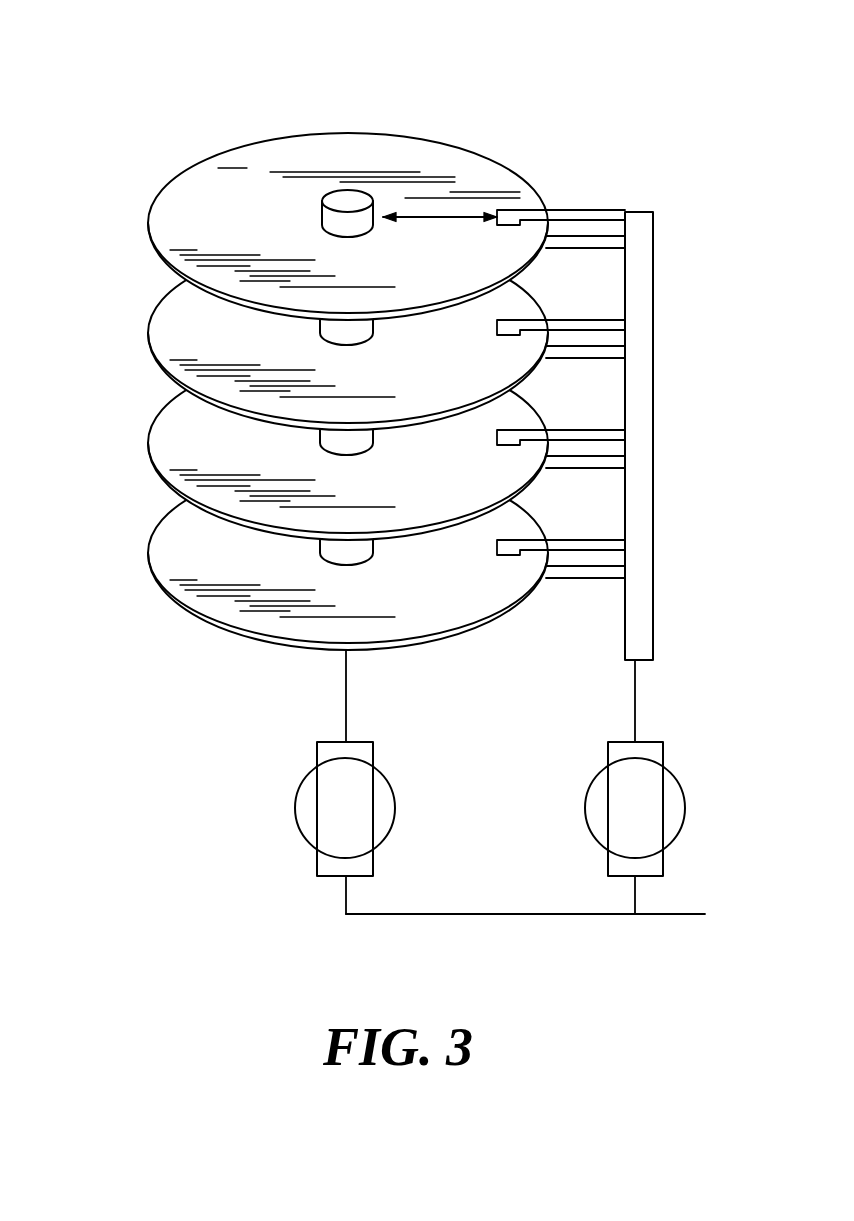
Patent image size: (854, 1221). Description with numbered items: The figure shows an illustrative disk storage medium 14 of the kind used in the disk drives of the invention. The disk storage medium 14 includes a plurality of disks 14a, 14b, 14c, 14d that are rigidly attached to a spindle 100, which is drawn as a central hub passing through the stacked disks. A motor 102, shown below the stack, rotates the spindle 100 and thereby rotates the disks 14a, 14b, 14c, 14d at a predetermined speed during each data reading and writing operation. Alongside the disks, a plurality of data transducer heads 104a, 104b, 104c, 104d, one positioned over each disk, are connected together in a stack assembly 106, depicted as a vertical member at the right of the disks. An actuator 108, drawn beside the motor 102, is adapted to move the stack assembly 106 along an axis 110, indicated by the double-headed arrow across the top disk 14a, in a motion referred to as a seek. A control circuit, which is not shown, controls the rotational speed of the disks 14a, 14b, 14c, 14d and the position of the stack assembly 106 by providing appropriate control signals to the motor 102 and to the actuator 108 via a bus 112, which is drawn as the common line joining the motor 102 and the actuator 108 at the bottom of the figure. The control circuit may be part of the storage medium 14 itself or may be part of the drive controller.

The disk storage medium 14 is at (301, 327).
The disk 14a is at (148, 224).
The disk 14b is at (148, 335).
The disk 14c is at (148, 445).
The disk 14d is at (148, 553).
The spindle 100 is at (322, 208).
The motor 102 is at (296, 810).
The data transducer head 104a is at (510, 216).
The data transducer head 104b is at (510, 326).
The data transducer head 104c is at (510, 436).
The data transducer head 104d is at (510, 546).
The stack assembly 106 is at (653, 306).
The actuator 108 is at (585, 811).
The axis 110 is at (437, 216).
The bus 112 is at (513, 914).